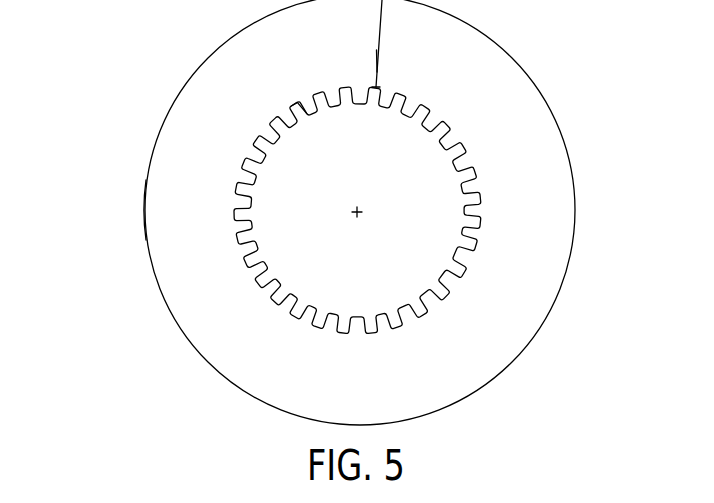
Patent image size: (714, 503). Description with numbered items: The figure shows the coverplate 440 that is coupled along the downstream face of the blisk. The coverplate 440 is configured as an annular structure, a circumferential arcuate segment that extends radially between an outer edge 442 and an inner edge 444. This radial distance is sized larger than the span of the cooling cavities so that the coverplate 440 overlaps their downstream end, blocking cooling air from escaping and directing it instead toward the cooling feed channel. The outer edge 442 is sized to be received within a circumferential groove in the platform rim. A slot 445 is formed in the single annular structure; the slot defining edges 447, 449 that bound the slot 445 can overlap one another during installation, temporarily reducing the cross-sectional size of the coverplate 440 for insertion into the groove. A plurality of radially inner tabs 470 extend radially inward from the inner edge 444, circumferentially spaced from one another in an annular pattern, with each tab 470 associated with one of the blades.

The coverplate 440 is at (104, 222).
The outer edge 442 is at (529, 343).
The inner edge 444 is at (466, 168).
The slot 445 is at (378, 45).
The slot defining edge 447 is at (376, 62).
The slot defining edge 449 is at (376, 85).
The radially inner tab 470 is at (276, 146).